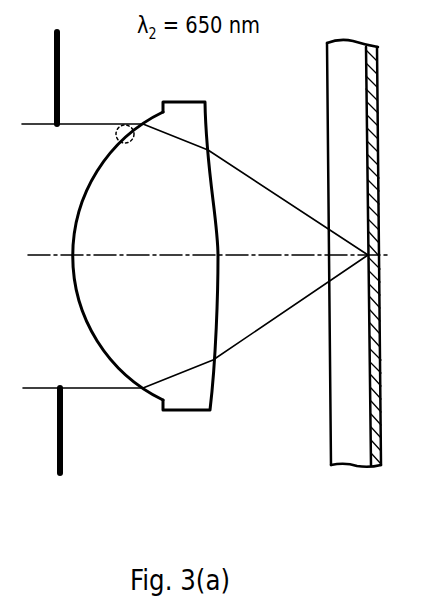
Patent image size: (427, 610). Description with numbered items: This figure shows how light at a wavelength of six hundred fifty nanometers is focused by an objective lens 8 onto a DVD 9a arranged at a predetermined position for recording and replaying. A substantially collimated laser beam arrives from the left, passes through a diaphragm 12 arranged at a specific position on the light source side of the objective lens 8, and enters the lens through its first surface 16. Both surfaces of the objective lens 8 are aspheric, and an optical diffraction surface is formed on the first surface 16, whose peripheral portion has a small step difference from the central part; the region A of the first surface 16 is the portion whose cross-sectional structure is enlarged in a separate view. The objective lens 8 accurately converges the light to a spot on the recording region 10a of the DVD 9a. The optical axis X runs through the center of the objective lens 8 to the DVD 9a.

The objective lens 8 is at (126, 275).
The first surface 16 is at (82, 200).
The diaphragm 12 is at (63, 437).
The DVD 9a is at (347, 453).
The recording region 10a is at (377, 466).
The region A is at (116, 133).
The optical axis X is at (59, 256).